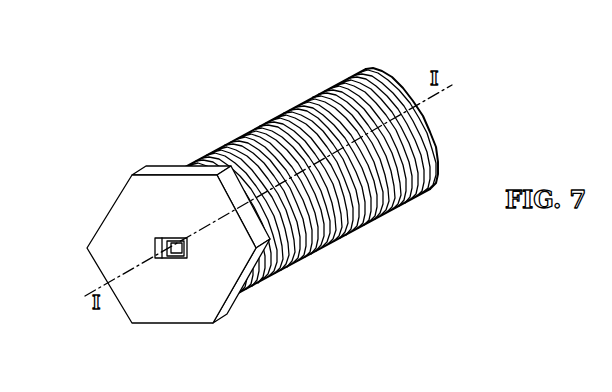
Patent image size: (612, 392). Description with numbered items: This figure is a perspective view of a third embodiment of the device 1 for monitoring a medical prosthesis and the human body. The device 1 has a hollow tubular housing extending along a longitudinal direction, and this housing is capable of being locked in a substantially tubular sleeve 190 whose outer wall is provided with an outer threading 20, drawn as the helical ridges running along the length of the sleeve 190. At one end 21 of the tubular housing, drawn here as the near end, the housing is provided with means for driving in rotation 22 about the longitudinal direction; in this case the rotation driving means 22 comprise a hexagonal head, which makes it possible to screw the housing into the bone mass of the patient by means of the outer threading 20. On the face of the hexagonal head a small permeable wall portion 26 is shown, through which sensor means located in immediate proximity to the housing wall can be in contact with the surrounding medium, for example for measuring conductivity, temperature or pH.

The device for monitoring a medical prosthesis and the human body 1 is at (237, 185).
The outer threading 20 is at (297, 178).
The end 21 is at (151, 230).
The means for driving in rotation 22 is at (144, 266).
The permeable wall portion 26 is at (180, 242).
The tubular sleeve 190 is at (346, 239).